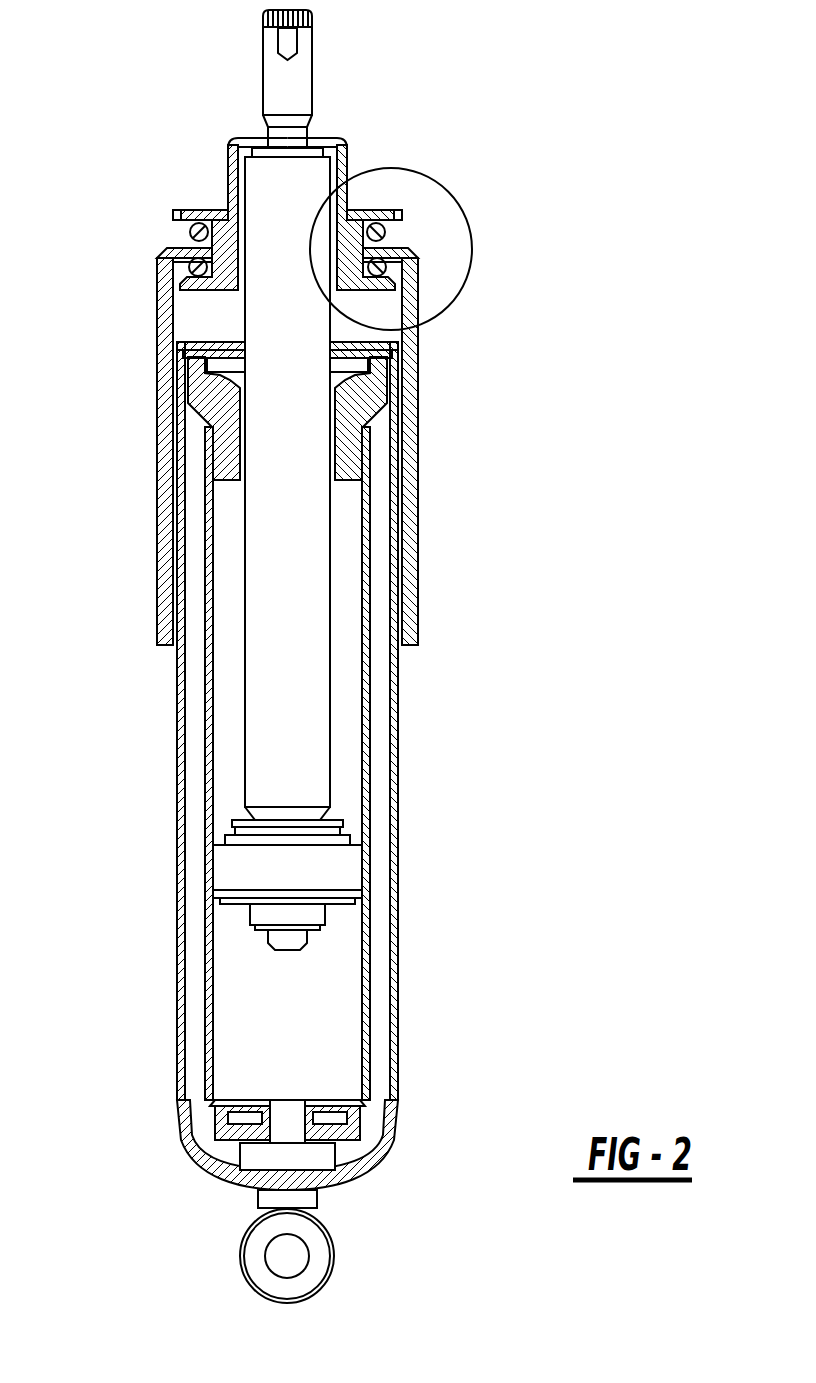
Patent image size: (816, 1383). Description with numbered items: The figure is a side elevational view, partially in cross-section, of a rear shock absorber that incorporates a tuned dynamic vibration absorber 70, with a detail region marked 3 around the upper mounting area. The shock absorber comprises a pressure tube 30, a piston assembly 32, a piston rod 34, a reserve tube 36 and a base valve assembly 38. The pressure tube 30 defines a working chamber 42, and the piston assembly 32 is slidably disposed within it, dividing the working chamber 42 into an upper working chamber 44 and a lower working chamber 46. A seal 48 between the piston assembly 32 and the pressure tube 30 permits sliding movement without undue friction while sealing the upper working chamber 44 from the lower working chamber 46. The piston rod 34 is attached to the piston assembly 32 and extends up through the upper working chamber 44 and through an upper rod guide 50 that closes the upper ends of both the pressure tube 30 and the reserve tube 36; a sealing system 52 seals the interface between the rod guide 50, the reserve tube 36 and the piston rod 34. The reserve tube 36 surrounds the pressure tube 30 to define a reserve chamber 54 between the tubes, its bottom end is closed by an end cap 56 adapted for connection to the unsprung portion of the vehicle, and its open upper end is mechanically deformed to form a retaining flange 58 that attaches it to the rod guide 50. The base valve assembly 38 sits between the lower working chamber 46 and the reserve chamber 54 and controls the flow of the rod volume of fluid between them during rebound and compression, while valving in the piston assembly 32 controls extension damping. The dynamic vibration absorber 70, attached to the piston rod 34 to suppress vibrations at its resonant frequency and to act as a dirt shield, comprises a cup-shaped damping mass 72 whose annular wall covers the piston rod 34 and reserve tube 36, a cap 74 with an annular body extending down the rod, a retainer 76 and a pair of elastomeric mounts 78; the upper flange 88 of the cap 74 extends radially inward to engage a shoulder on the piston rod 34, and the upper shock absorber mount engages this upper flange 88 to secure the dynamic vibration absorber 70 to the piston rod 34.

The detail circle FIG. 3 is at (343, 180).
The pressure tube 30 is at (363, 548).
The piston assembly 32 is at (343, 872).
The piston rod 34 is at (290, 736).
The reserve tube 36 is at (393, 683).
The base valve assembly 38 is at (274, 1085).
The working chamber 42 is at (324, 969).
The upper working chamber 44 is at (343, 733).
The lower working chamber 46 is at (292, 1038).
The seal 48 is at (296, 886).
The upper rod guide 50 is at (360, 403).
The sealing system 52 is at (382, 321).
The reserve chamber 54 is at (372, 963).
The end cap 56 is at (363, 1160).
The retaining flange 58 is at (407, 340).
The dynamic vibration absorber 70 is at (210, 299).
The damping mass 72 is at (415, 485).
The cap 74 is at (337, 157).
The retainer 76 is at (197, 212).
The elastomeric mounts 78 is at (189, 237).
The upper flange 88 is at (257, 140).